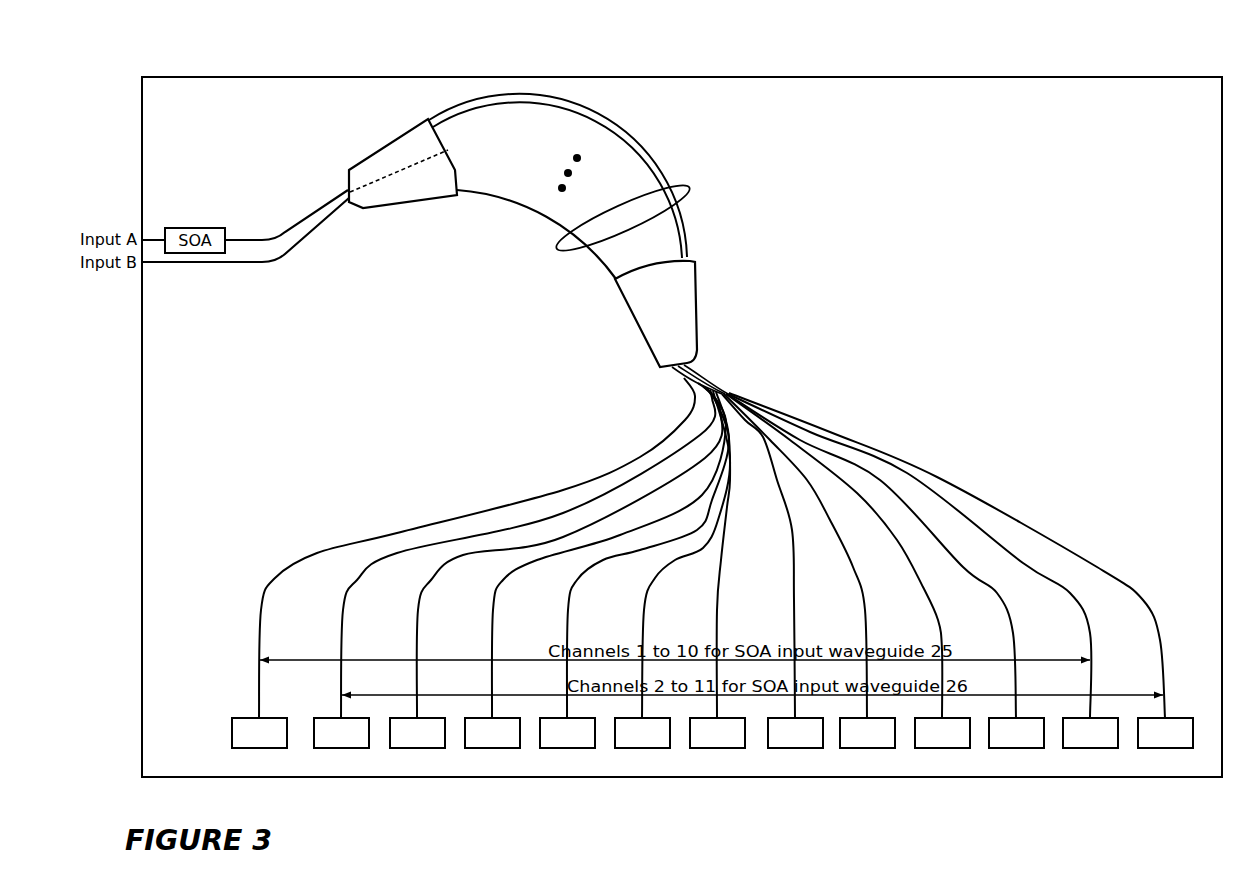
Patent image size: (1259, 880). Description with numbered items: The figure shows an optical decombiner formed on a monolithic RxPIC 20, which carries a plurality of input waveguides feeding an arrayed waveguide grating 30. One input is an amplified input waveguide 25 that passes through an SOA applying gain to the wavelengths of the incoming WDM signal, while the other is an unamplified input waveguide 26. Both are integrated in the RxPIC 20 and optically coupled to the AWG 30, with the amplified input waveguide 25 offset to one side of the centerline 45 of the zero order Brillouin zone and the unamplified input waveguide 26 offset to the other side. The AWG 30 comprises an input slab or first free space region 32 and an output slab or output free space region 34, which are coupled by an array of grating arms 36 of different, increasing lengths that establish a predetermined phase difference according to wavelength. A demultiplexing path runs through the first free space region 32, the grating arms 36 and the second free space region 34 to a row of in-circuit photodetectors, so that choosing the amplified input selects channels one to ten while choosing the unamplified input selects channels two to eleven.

The RxPIC 20 is at (682, 427).
The amplified input waveguide 25 is at (312, 213).
The unamplified input waveguide 26 is at (307, 231).
The arrayed waveguide grating 30 is at (620, 117).
The input slab 32 is at (393, 150).
The output slab 34 is at (685, 317).
The grating arms 36 is at (688, 192).
The centerline 45 is at (388, 177).